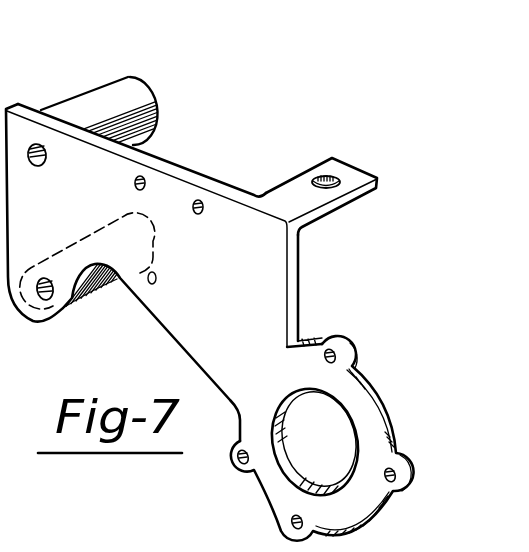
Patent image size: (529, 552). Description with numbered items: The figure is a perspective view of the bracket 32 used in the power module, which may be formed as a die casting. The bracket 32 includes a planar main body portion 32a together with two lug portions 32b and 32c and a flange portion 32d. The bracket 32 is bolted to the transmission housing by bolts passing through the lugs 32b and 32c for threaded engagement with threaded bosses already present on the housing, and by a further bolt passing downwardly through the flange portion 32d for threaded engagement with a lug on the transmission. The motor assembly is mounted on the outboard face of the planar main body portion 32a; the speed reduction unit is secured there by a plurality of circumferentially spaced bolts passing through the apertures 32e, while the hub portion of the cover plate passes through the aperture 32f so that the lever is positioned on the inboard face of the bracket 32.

The bracket 32 is at (248, 108).
The planar main body portion 32a is at (247, 287).
The lug portion 32b is at (137, 40).
The lug portion 32c is at (103, 284).
The flange portion 32d is at (348, 162).
The apertures 32e is at (343, 341).
The aperture 32f is at (344, 438).